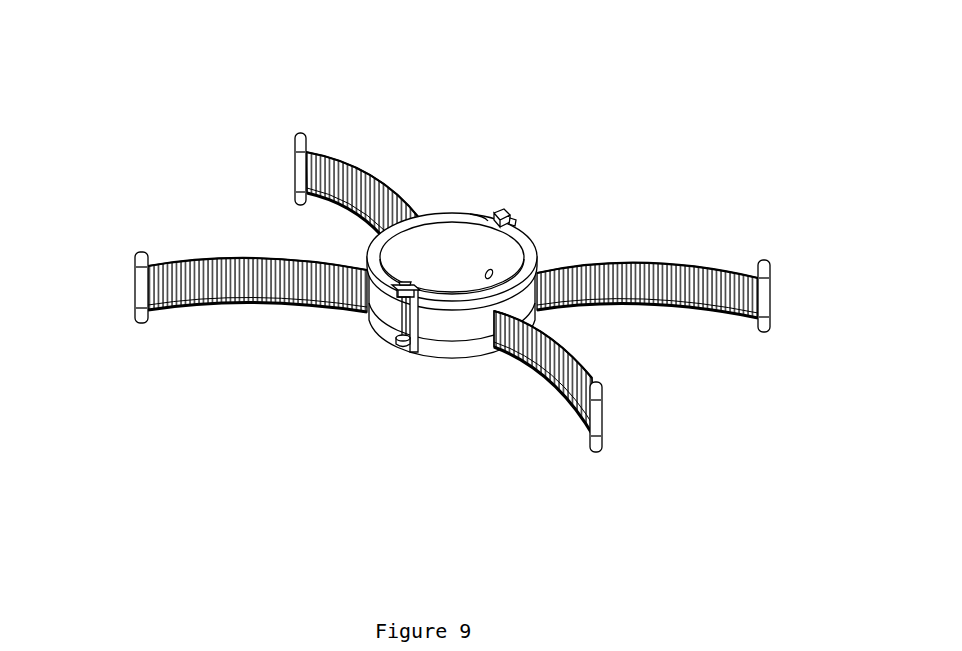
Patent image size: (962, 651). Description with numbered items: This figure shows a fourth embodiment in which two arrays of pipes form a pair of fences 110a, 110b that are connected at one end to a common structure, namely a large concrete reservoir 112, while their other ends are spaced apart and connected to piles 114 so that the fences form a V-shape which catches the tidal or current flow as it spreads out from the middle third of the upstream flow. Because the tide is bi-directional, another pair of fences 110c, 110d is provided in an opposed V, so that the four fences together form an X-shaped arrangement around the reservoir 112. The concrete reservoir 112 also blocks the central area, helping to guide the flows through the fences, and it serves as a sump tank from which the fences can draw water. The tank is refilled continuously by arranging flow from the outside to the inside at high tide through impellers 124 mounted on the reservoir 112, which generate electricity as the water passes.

The fence 110a is at (228, 257).
The fence 110b is at (375, 168).
The fence 110c is at (718, 268).
The fence 110d is at (545, 387).
The concrete reservoir 112 is at (517, 235).
The pile 114 is at (295, 135).
The impeller 124 is at (405, 343).